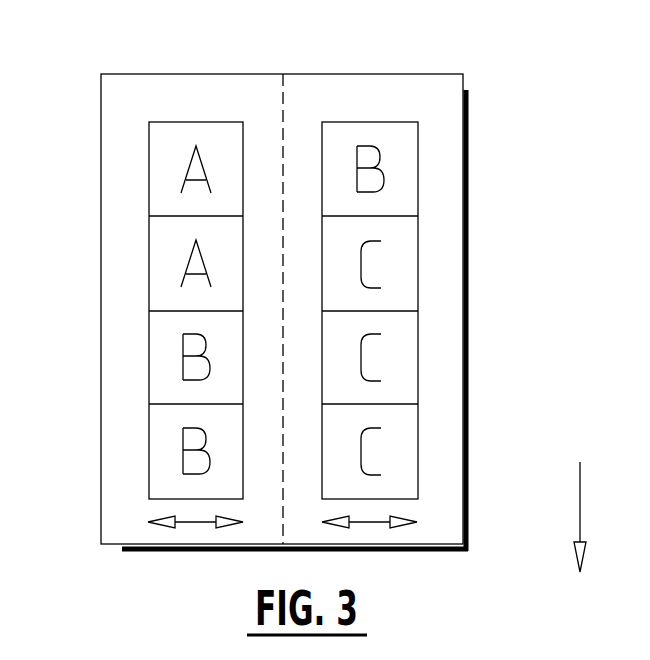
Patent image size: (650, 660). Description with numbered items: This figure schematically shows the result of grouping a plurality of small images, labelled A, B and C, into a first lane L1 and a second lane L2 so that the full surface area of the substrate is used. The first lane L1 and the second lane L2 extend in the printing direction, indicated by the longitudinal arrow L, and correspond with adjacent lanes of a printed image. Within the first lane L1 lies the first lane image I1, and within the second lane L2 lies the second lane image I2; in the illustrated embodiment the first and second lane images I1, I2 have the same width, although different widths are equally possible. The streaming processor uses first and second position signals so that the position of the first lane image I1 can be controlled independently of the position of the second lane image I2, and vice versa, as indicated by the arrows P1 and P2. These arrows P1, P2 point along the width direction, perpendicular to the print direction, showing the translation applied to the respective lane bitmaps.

The first lane L1 is at (205, 72).
The second lane L2 is at (369, 72).
The first lane image I1 is at (149, 282).
The second lane image I2 is at (418, 292).
The arrow indicating translation of first lane image P1 is at (200, 522).
The arrow indicating translation of second lane image P2 is at (365, 522).
The longitudinal direction L is at (588, 517).